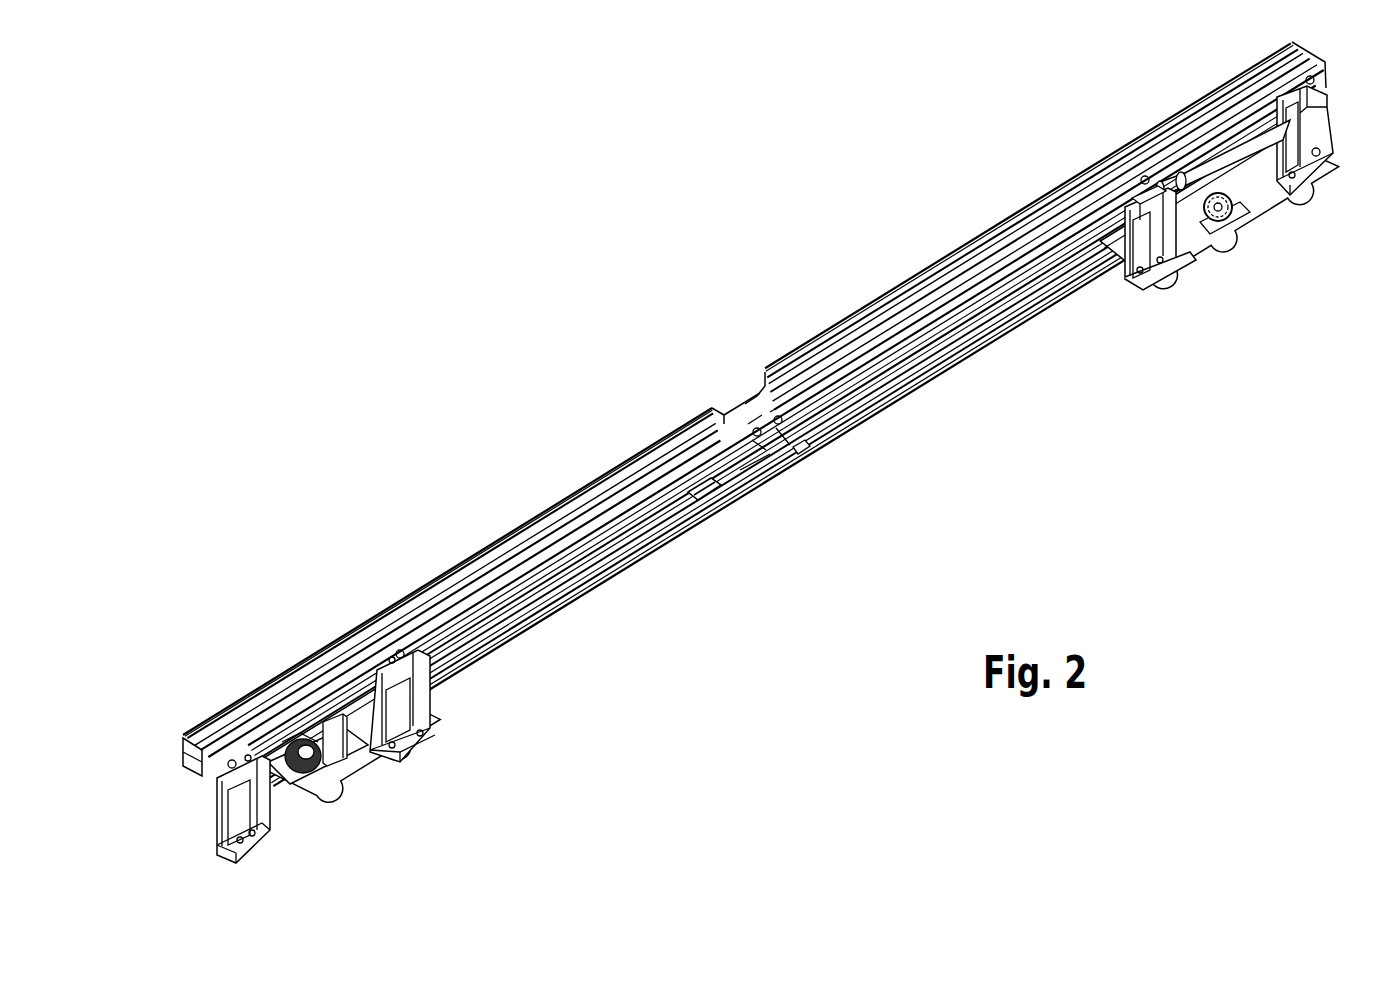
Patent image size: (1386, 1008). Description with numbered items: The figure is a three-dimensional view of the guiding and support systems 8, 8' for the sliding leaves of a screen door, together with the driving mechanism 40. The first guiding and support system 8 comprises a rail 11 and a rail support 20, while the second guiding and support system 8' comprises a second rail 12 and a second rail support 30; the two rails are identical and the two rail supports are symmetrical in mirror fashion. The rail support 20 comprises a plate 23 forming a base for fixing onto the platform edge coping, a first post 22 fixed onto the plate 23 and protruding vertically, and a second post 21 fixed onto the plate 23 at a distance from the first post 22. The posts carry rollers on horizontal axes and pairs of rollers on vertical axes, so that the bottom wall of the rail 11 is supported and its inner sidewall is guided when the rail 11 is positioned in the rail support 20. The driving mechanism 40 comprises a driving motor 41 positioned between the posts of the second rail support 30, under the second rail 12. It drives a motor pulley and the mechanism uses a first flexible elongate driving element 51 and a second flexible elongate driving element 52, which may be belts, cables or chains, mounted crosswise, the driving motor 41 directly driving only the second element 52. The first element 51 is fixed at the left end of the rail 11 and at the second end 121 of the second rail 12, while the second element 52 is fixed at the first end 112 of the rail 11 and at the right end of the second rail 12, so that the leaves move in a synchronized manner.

The first guiding and support system 8 is at (724, 486).
The second guiding and support system 8' is at (1049, 292).
The rail 11 is at (326, 665).
The second rail 12 is at (897, 325).
The first end of the second flexible elongate driving element 112 is at (712, 500).
The second end of the first flexible elongate driving element 121 is at (800, 458).
The first flexible elongate driving element 51 is at (990, 300).
The second flexible elongate driving element 52 is at (749, 488).
The rail support 20 is at (208, 833).
The second post 21 is at (217, 822).
The first post 22 is at (412, 712).
The plate 23 is at (350, 767).
The second rail support 30 is at (1318, 130).
The driving mechanism 40 is at (1228, 212).
The driving motor 41 is at (1272, 212).